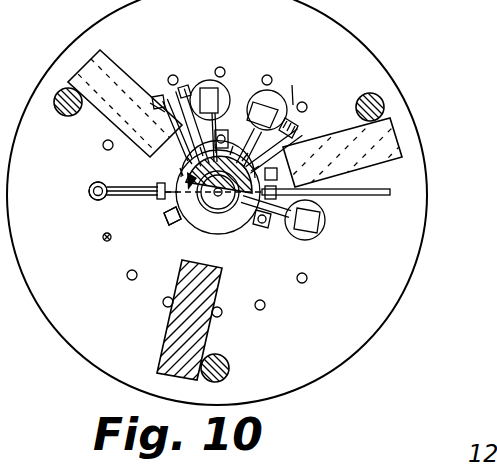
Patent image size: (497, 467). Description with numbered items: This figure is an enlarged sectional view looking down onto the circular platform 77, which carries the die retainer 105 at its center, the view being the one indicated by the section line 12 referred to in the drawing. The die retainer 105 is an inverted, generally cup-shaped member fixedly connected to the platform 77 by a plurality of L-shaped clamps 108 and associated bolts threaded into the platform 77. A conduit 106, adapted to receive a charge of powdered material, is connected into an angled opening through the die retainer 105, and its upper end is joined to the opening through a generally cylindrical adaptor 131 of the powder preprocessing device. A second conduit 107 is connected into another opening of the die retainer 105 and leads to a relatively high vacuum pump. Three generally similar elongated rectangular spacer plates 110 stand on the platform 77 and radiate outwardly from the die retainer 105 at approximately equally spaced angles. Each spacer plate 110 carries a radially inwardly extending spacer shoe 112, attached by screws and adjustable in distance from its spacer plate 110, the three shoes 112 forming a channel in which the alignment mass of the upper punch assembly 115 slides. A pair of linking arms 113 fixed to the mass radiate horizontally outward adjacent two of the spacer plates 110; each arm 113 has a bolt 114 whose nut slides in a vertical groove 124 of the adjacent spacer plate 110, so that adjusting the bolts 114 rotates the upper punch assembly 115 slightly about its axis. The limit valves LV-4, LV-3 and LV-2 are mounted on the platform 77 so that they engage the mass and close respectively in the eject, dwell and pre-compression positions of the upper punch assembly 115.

The platform 77 is at (376, 319).
The central shaft hub 12 is at (240, 207).
The limit valve LV-4 is at (231, 88).
The limit valve LV-3 is at (262, 91).
The limit valve LV-2 is at (310, 237).
The conduit 107 is at (376, 196).
The conduit 106 is at (118, 183).
The adaptor 131 is at (92, 205).
The die retainer 105 is at (192, 224).
The L-shaped clamp 108 is at (165, 222).
The upper punch assembly 115 is at (186, 230).
The spacer plate 110 is at (110, 68).
The vertical groove 124 is at (150, 103).
The spacer shoe 112 is at (177, 132).
The linking arm 113 is at (180, 83).
The bolt 114 is at (207, 87).